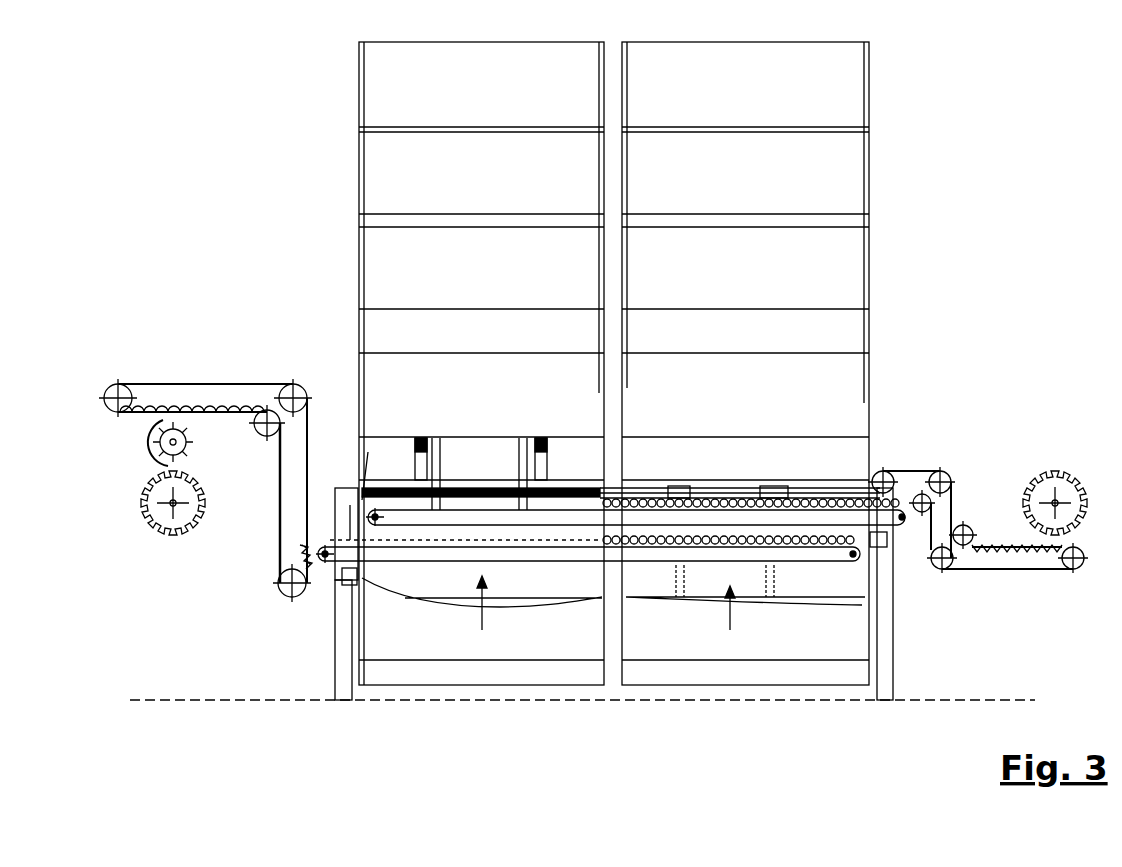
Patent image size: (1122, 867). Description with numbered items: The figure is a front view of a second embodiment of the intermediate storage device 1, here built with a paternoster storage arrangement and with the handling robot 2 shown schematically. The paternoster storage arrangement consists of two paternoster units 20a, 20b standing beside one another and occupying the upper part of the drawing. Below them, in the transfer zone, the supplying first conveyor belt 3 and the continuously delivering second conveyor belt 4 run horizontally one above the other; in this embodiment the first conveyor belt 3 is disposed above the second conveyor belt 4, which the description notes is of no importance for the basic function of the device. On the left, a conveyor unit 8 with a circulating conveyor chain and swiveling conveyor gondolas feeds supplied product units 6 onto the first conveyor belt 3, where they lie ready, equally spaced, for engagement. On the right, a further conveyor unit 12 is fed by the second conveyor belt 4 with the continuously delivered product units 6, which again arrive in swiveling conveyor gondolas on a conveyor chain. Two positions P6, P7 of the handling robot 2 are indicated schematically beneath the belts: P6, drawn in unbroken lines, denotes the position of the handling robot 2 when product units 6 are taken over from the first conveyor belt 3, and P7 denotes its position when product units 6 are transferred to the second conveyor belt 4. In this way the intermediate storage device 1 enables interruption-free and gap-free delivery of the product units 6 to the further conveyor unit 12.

The intermediate storage device 1 is at (703, 363).
The paternoster unit 20a is at (496, 181).
The paternoster unit 20b is at (756, 181).
The handling robot 2 is at (517, 465).
The first conveyor belt 3 is at (632, 515).
The second conveyor belt 4 is at (630, 553).
The product units 6 is at (611, 576).
The conveyor unit 8 is at (1023, 462).
The further conveyor unit 12 is at (178, 560).
The position of handling robot P6 is at (482, 614).
The position of handling robot P7 is at (730, 619).